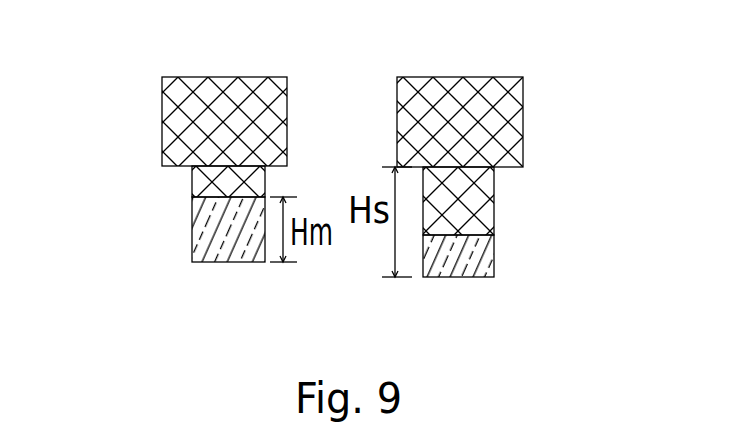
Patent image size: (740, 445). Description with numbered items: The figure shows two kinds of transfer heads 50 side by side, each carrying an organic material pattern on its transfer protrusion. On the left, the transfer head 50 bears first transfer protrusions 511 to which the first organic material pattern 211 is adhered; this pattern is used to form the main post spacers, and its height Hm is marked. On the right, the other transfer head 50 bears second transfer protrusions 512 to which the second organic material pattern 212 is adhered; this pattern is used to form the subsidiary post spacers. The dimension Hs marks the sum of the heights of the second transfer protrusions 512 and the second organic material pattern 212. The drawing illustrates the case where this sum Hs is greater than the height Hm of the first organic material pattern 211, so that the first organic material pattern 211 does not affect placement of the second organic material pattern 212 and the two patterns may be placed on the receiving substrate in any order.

The transfer head 50 is at (162, 103).
The first transfer protrusion 511 is at (192, 178).
The first organic material pattern 211 is at (192, 223).
The second transfer protrusion 512 is at (494, 218).
The second organic material pattern 212 is at (494, 258).